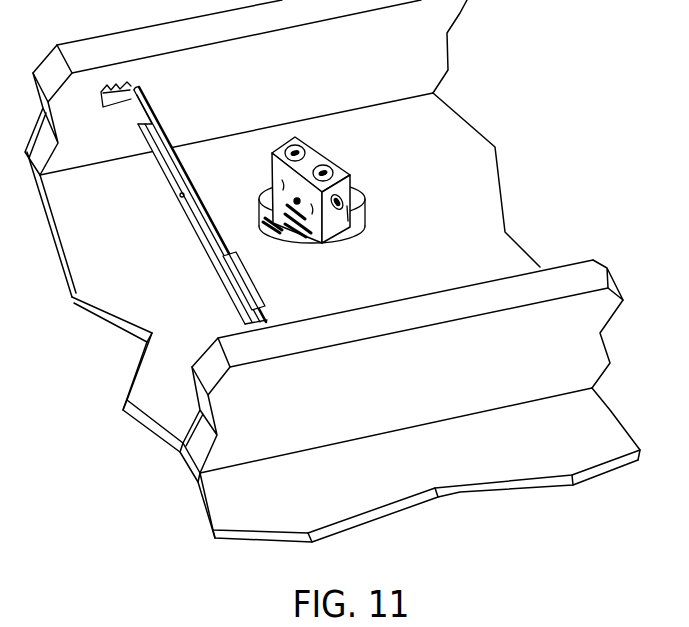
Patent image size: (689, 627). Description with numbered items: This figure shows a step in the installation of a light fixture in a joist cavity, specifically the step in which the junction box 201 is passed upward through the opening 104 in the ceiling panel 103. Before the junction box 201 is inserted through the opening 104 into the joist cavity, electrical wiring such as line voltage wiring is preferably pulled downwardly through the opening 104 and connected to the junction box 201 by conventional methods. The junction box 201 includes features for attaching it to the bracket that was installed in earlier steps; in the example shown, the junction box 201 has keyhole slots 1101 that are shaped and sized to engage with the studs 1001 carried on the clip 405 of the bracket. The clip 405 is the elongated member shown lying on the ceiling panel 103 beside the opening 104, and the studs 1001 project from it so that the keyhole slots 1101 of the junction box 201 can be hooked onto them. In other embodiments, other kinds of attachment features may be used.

The ceiling panel 103 is at (497, 147).
The opening 104 is at (365, 212).
The junction box 201 is at (321, 158).
The clip 405 is at (232, 270).
The studs 1001 is at (243, 272).
The keyhole slots 1101 is at (312, 140).